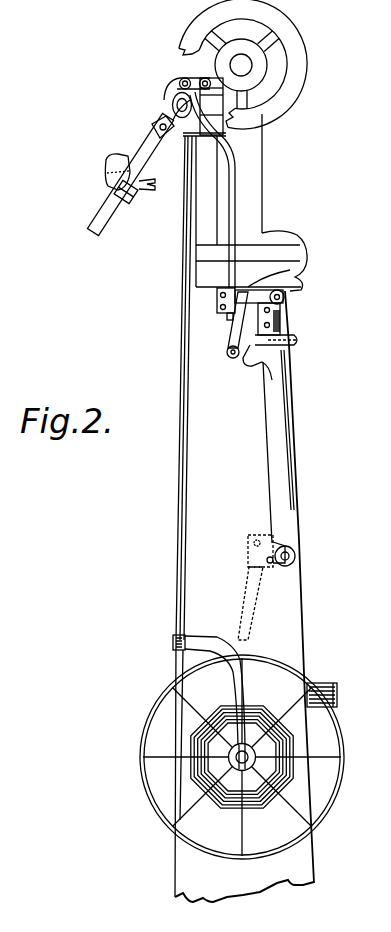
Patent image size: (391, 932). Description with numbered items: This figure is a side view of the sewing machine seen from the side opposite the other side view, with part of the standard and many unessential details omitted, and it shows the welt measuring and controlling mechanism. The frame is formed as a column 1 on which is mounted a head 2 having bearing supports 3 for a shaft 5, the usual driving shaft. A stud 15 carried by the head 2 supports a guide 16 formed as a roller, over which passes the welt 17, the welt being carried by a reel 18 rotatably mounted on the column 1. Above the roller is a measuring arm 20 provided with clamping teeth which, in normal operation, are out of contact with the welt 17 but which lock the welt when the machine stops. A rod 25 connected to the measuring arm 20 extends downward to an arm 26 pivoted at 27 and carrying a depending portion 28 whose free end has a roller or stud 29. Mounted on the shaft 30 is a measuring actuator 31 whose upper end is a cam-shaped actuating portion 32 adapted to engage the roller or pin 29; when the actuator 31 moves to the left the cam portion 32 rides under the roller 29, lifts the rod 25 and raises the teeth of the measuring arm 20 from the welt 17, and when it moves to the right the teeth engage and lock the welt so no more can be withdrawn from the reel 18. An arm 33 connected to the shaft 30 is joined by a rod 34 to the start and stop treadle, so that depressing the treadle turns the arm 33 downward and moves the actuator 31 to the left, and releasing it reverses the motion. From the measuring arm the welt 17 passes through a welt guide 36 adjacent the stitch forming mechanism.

The column 1 is at (292, 625).
The head 2 is at (293, 252).
The bearing supports 3 is at (262, 140).
The shaft 5 is at (247, 63).
The stud 15 is at (172, 101).
The guide 16 is at (172, 116).
The welt 17 is at (152, 158).
The reel 18 is at (344, 755).
The measuring arm 20 is at (173, 78).
The rod 25 is at (236, 189).
The arm 26 is at (250, 282).
The pivot 27 is at (285, 298).
The depending portion 28 is at (240, 331).
The roller or stud 29 is at (232, 358).
The shaft 30 is at (295, 556).
The measuring actuator 31 is at (280, 412).
The actuating portion 32 is at (298, 340).
The arm 33 is at (270, 537).
The rod 34 is at (249, 604).
The welt guide 36 is at (134, 197).